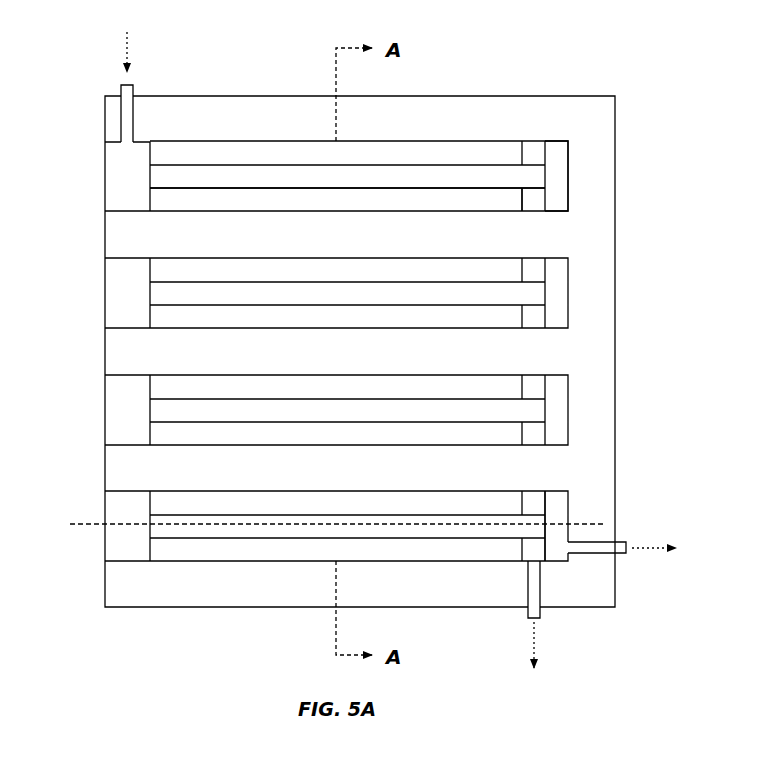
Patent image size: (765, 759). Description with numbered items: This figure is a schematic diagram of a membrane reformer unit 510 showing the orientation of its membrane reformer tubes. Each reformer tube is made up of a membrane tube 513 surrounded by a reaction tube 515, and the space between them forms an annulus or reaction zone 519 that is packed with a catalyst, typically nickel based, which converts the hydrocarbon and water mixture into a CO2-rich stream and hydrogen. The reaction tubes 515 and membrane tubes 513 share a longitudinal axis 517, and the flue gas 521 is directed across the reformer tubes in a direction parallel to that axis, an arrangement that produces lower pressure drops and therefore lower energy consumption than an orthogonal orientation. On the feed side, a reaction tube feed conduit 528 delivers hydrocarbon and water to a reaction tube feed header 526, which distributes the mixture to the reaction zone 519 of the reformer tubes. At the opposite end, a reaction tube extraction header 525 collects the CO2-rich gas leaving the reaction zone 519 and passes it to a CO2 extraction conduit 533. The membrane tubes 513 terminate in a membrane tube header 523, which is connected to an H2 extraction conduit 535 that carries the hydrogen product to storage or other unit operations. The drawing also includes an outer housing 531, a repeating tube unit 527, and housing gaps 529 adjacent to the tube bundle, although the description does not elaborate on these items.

The membrane reformer unit 510 is at (563, 47).
The membrane tube 513 is at (493, 190).
The reaction tube 515 is at (480, 141).
The longitudinal axis 517 is at (85, 523).
The reaction zone 519 is at (425, 205).
The flue gas 521 is at (119, 234).
The membrane tube header 523 is at (556, 178).
The reaction tube extraction header 525 is at (542, 561).
The reaction tube feed header 526 is at (128, 178).
The cell unit 527 is at (105, 249).
The reaction tube feed conduit 528 is at (131, 84).
The housing gap 529 is at (563, 352).
The housing 531 is at (440, 96).
The CO2 extraction conduit 533 is at (533, 620).
The H2 extraction conduit 535 is at (628, 548).